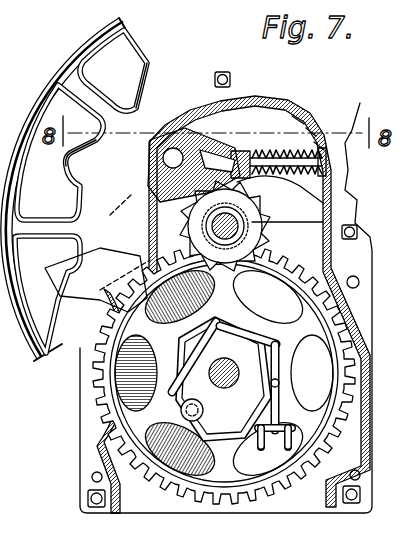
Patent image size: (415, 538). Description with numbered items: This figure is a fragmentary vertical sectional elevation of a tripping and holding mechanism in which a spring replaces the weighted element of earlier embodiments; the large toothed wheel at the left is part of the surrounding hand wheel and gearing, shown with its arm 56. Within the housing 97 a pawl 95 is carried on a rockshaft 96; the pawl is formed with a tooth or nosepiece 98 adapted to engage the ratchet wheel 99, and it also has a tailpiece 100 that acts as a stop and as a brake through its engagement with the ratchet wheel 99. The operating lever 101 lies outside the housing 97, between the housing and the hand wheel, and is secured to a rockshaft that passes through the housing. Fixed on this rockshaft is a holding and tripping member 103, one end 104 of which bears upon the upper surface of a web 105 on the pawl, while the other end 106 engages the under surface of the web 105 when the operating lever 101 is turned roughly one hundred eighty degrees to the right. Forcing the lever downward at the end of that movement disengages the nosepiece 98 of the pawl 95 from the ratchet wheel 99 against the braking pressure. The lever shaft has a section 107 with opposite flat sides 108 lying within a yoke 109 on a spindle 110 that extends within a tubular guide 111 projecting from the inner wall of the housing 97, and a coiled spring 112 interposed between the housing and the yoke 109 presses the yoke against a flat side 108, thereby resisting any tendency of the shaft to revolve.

The sector lever arm 56 is at (62, 189).
The pawl 95 is at (178, 150).
The rockshaft 96 is at (68, 157).
The housing 97 is at (92, 430).
The tooth or nosepiece 98 is at (220, 160).
The ratchet wheel 99 is at (283, 213).
The tailpiece 100 is at (118, 196).
The operating lever 101 is at (80, 292).
The holding and tripping member 103 is at (240, 105).
The end of holding and tripping member 104 is at (182, 133).
The web 105 is at (138, 64).
The other end of holding and tripping member 106 is at (320, 145).
The section of shaft 107 is at (298, 118).
The flat sides 108 is at (262, 145).
The yoke 109 is at (312, 132).
The spindle 110 is at (305, 160).
The tubular guide 111 is at (313, 172).
The coiled spring 112 is at (332, 150).